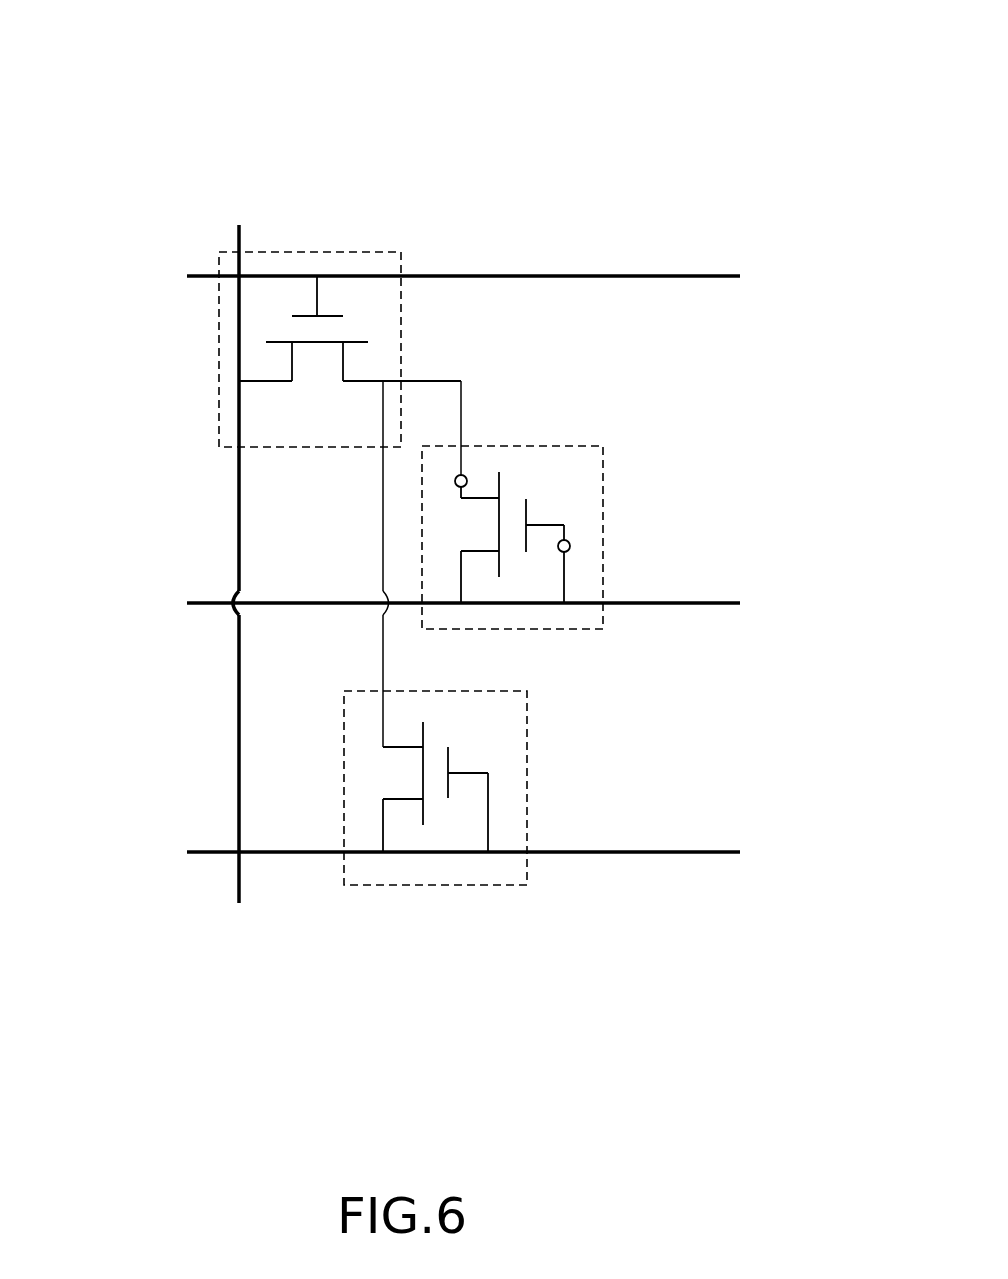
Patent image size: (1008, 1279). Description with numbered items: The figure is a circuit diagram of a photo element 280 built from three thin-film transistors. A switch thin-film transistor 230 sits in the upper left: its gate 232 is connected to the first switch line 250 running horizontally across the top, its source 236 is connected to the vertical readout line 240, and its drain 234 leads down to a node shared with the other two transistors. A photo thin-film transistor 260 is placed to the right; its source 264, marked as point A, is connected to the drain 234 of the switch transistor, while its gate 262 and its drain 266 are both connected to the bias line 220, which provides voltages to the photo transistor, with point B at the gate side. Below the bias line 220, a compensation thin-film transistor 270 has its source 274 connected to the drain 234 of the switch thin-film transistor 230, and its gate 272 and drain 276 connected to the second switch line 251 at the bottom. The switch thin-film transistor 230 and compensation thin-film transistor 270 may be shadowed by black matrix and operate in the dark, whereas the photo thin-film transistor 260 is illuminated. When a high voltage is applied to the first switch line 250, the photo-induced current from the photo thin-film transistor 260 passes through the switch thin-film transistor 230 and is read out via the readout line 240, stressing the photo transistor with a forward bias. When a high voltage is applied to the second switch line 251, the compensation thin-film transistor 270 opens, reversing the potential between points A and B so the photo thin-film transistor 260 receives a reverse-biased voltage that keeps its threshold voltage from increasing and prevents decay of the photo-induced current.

The photo element 280 is at (548, 110).
The first switch line 250 is at (641, 276).
The bias line 220 is at (688, 603).
The second switch line 251 is at (691, 855).
The readout line 240 is at (239, 735).
The switch thin-film transistor 230 is at (272, 252).
The gate of the switch thin-film transistor 232 is at (317, 300).
The source of the switch thin-film transistor 236 is at (266, 381).
The drain of the switch thin-film transistor 234 is at (374, 381).
The photo thin-film transistor 260 is at (603, 513).
The source of the photo thin-film transistor 264 is at (461, 475).
The gate of the photo thin-film transistor 262 is at (548, 523).
The drain of the photo thin-film transistor 266 is at (459, 590).
The compensation thin-film transistor 270 is at (527, 770).
The source of the compensation thin-film transistor 274 is at (383, 708).
The drain of the compensation thin-film transistor 276 is at (383, 825).
The gate of the compensation thin-film transistor 272 is at (468, 773).